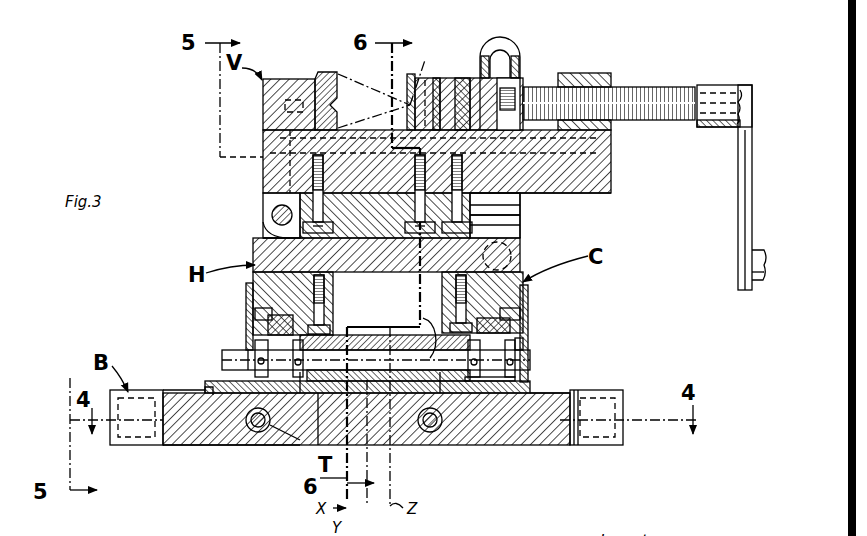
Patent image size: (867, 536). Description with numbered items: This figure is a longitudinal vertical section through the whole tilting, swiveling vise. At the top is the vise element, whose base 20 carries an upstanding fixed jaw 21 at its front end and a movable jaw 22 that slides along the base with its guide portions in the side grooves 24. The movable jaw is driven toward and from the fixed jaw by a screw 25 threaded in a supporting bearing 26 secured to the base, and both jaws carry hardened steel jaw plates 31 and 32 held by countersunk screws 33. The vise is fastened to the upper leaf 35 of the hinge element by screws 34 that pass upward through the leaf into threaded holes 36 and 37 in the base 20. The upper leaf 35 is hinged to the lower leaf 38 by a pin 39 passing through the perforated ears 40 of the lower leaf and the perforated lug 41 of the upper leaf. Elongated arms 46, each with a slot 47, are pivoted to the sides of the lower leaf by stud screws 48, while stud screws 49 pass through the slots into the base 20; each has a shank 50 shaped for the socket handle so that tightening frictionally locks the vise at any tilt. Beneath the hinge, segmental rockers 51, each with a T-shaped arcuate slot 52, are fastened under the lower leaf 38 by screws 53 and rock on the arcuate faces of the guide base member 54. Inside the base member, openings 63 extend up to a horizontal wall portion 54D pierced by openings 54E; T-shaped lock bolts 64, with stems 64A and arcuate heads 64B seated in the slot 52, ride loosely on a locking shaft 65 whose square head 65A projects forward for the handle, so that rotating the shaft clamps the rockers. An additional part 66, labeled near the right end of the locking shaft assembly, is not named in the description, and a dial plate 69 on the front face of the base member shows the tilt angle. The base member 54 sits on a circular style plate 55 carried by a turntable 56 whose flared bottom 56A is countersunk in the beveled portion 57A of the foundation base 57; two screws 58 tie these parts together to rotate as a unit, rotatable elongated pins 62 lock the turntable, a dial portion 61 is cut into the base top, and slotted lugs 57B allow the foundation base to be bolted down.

The base 20 is at (580, 185).
The stationary jaw 21 is at (273, 96).
The movable jaw 22 is at (458, 78).
The side grooves 24 is at (598, 154).
The screw 25 is at (632, 88).
The supporting bearing 26 is at (583, 74).
The jaw plate 31 is at (336, 72).
The jaw plate 32 is at (411, 74).
The countersunk screws 33 is at (302, 104).
The screws 34 is at (316, 168).
The upper leaf 35 is at (505, 217).
The threaded hole 36 is at (315, 152).
The threaded hole 37 is at (414, 158).
The lower leaf 38 is at (272, 255).
The pin 39 is at (272, 230).
The perforated ears 40 is at (274, 213).
The perforated lug 41 is at (280, 240).
The elongated arms 46 is at (510, 46).
The elongated slot 47 is at (515, 62).
The stud screws 48 is at (513, 254).
The stud screws 49 is at (530, 200).
The shank 50 is at (738, 148).
The rockers 51 is at (253, 283).
The arcuate slot 52 is at (255, 313).
The screws 53 is at (326, 291).
The guide base member 54 is at (446, 376).
The horizontal wall portion 54D is at (255, 348).
The openings 54E is at (512, 335).
The style plate 55 is at (208, 383).
The turntable 56 is at (398, 438).
The flared bottom portion 56A is at (280, 436).
The foundation base 57 is at (531, 440).
The beveled circular portion 57A is at (250, 440).
The open-slotted lugs 57B is at (146, 445).
The screws 58 is at (321, 425).
The circular dial portion 61 is at (204, 395).
The pins 62 is at (250, 428).
The openings 63 is at (300, 374).
The lock bolts 64 is at (268, 325).
The vertical stem 64A is at (492, 381).
The top head 64B is at (510, 321).
The locking shaft 65 is at (424, 320).
The square head 65A is at (255, 362).
The collar 66 is at (521, 345).
The dial plate 69 is at (246, 295).